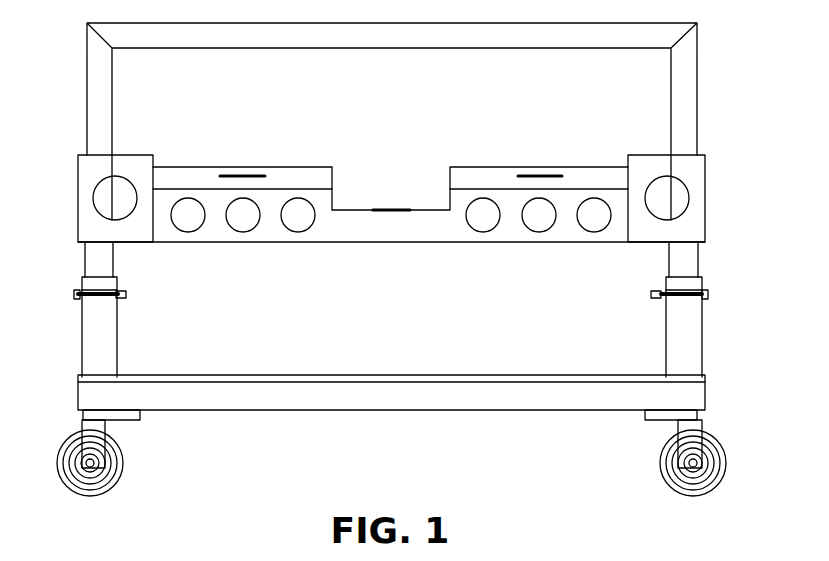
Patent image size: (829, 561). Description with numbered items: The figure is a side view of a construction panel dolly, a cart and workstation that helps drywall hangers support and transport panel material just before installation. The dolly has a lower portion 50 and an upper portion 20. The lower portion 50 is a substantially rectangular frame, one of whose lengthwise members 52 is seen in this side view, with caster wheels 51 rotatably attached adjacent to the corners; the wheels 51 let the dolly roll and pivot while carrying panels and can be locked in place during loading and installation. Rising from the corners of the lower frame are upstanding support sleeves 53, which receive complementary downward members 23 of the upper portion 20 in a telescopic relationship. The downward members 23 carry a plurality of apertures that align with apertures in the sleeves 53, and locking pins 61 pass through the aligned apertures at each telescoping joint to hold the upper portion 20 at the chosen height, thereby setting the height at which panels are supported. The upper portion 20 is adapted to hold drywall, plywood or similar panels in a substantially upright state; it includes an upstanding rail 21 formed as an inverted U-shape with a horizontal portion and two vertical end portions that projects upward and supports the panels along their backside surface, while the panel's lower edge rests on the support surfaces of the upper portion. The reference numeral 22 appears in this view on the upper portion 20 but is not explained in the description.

The upper portion 20 is at (732, 94).
The upstanding rail 21 is at (380, 48).
The tool holder notch with holes 22 is at (392, 265).
The downward member 23 is at (90, 262).
The lower portion 50 is at (732, 318).
The caster wheel 51 is at (125, 467).
The lengthwise member 52 is at (410, 400).
The upstanding support sleeve 53 is at (110, 345).
The locking pin 61 is at (128, 293).